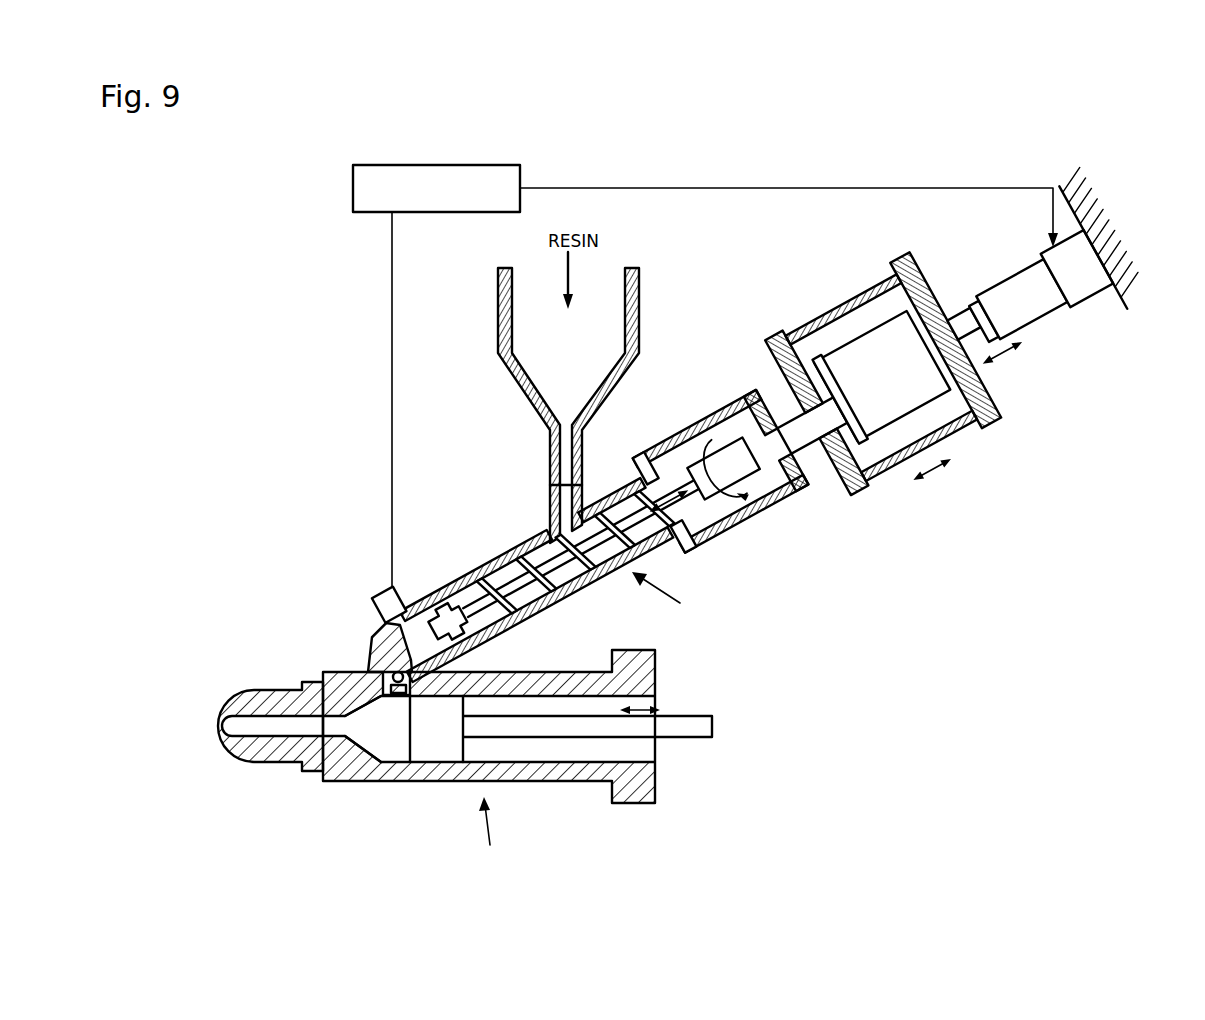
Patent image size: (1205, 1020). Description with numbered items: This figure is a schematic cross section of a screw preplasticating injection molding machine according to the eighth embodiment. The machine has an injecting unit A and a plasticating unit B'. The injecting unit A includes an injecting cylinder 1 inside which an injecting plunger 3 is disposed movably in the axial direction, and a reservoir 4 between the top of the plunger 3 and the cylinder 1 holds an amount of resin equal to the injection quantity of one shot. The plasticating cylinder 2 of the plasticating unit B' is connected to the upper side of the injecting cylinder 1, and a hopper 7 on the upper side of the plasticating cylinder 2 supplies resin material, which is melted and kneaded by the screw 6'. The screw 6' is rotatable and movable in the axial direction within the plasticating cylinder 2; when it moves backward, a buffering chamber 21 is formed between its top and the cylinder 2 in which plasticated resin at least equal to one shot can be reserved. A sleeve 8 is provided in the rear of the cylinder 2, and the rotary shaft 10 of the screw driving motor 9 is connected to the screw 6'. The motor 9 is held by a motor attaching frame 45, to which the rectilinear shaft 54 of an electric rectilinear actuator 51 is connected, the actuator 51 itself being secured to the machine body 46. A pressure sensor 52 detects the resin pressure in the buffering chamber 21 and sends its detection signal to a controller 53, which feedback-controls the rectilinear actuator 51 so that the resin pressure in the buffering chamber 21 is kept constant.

The controller 53 is at (383, 165).
The hopper 7 is at (495, 327).
The plasticating cylinder 2 is at (523, 613).
The screw 6' is at (566, 558).
The plasticating unit B' is at (669, 596).
The sleeve 8 is at (750, 518).
The rotary shaft 10 is at (797, 433).
The motor attaching frame 45 is at (960, 427).
The screw driving motor 9 is at (868, 370).
The rectilinear shaft 54 is at (962, 315).
The rectilinear actuator 51 is at (1033, 302).
The machine body 46 is at (1113, 243).
The pressure sensor 52 is at (383, 603).
The injecting cylinder 1 is at (555, 780).
The buffering chamber 21 is at (415, 647).
The injecting plunger 3 is at (440, 747).
The reservoir 4 is at (385, 745).
The injecting unit A is at (490, 832).